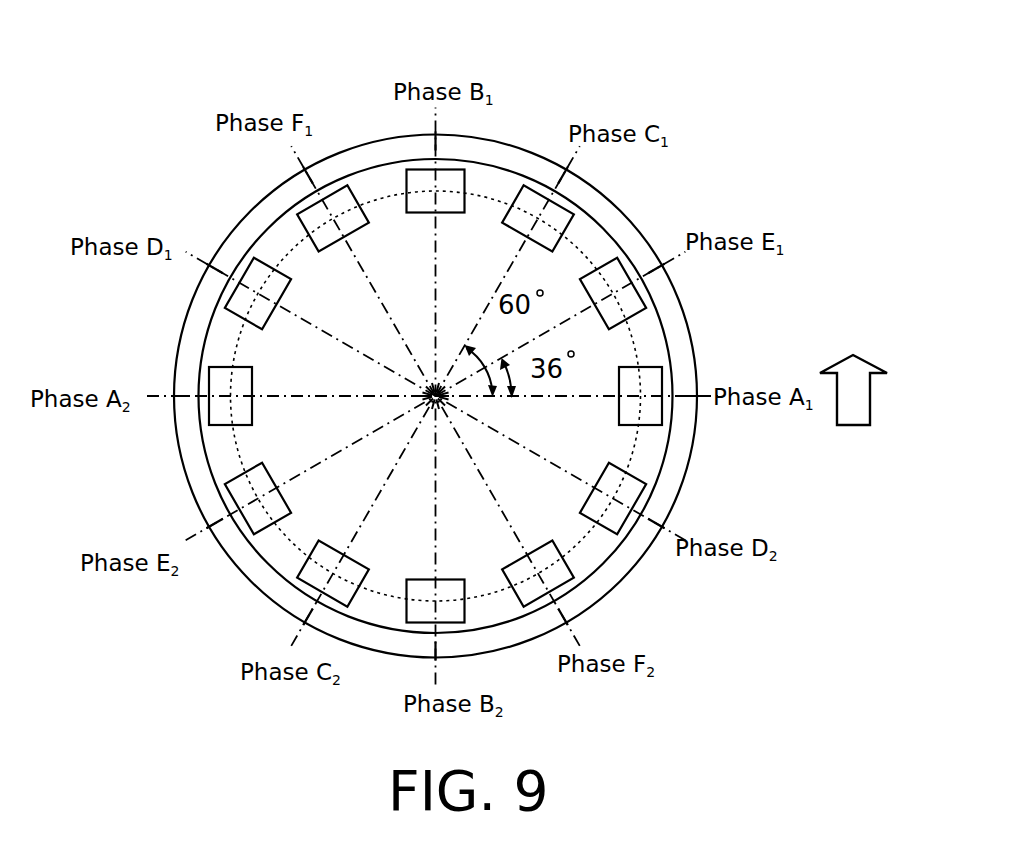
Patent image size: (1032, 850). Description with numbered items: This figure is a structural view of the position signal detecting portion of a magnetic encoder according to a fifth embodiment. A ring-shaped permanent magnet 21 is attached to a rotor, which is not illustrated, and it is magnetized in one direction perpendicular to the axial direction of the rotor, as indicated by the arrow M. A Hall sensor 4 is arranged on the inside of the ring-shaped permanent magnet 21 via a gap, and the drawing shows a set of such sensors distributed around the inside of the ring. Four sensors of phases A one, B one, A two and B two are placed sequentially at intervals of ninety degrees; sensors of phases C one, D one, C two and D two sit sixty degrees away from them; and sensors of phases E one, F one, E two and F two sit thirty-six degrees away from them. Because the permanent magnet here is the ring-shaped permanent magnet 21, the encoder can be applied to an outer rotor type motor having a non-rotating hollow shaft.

The Hall sensor 4 is at (418, 170).
The ring-shaped permanent magnet 21 is at (488, 140).
The magnetization direction arrow M is at (875, 392).